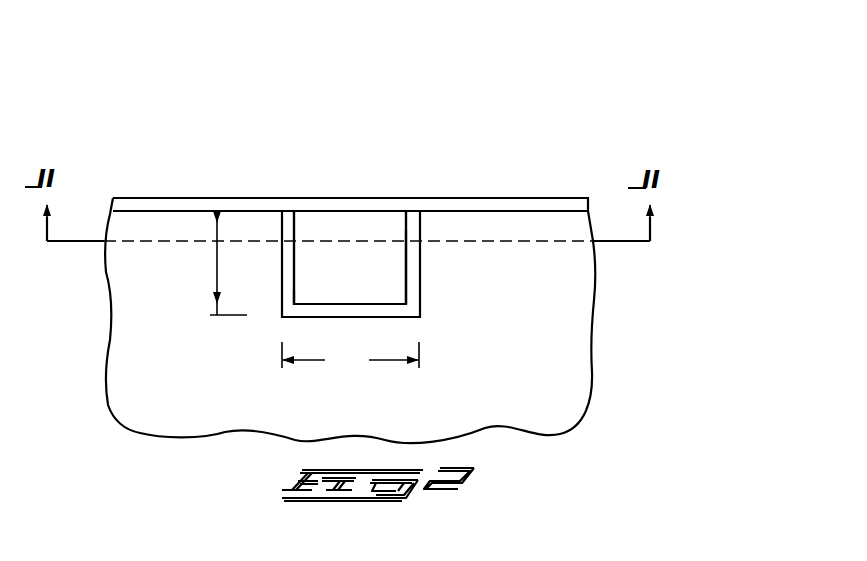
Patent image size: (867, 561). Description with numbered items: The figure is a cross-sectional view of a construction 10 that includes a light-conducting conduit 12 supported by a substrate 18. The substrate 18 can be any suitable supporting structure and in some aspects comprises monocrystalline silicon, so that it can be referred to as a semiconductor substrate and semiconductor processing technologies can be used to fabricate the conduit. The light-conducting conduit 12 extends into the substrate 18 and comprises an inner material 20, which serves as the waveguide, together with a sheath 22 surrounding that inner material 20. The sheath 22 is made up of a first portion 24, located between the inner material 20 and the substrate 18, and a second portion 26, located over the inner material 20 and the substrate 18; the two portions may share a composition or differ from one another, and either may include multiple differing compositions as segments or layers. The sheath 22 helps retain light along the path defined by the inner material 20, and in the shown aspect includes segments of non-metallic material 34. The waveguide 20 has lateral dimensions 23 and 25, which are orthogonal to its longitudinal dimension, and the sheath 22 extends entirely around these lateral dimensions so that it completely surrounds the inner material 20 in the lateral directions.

The construction 10 is at (582, 80).
The light-conducting conduit 12 is at (430, 152).
The substrate 18 is at (548, 402).
The inner material 20 is at (365, 282).
The sheath 22 is at (377, 173).
The lateral dimension 23 is at (350, 358).
The first portion 24 is at (412, 287).
The lateral dimension 25 is at (217, 270).
The second portion 26 is at (340, 197).
The non-metallic material 34 is at (289, 306).